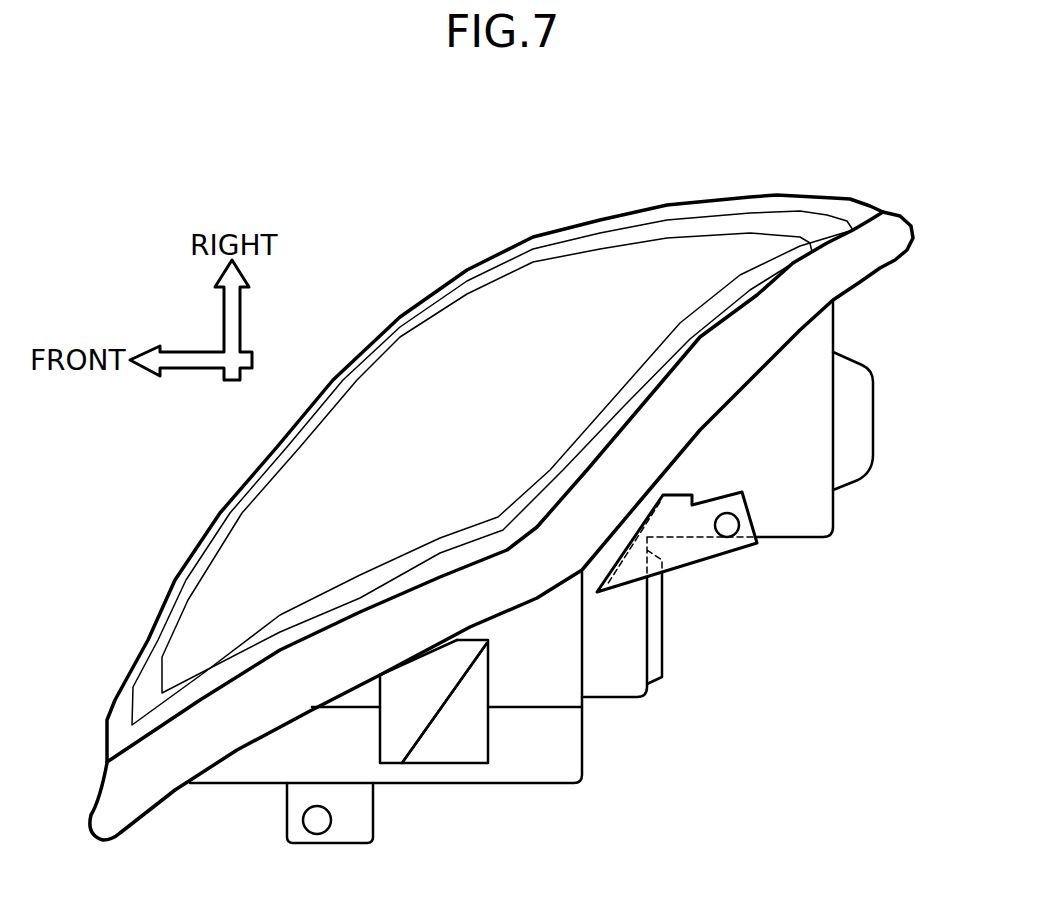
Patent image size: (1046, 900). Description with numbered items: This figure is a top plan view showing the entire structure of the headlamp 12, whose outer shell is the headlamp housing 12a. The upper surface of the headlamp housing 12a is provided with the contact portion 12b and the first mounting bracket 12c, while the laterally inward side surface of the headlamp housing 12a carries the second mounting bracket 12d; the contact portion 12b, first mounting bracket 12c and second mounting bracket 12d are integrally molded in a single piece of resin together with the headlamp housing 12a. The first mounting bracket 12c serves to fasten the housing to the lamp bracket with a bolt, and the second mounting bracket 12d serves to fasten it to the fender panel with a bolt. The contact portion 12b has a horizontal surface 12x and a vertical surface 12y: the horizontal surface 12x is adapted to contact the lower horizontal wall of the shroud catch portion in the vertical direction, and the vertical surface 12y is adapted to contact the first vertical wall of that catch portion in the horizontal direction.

The headlamp 12 is at (447, 310).
The headlamp housing 12a is at (608, 678).
The contact portion 12b is at (450, 759).
The first mounting bracket 12c is at (693, 555).
The second mounting bracket 12d is at (293, 817).
The horizontal surface 12x is at (462, 743).
The vertical surface 12y is at (437, 722).